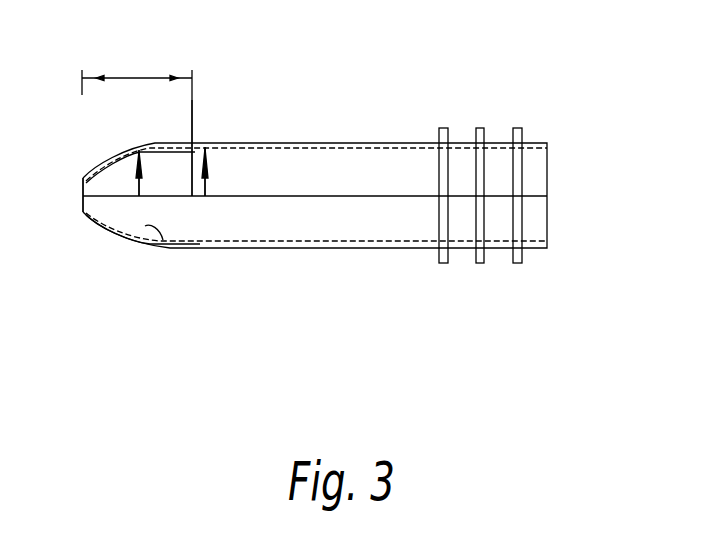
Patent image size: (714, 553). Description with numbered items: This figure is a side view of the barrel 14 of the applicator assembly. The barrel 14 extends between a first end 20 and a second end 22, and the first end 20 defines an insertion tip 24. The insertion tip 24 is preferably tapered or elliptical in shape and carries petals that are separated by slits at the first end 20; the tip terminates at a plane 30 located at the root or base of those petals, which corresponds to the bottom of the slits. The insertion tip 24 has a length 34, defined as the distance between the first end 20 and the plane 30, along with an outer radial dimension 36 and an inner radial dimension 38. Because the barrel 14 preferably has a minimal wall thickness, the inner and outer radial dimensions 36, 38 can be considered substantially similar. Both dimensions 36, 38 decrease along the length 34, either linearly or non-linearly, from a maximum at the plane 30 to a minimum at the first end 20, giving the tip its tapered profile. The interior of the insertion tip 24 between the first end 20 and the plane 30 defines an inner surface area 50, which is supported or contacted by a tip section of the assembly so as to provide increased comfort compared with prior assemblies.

The barrel 14 is at (239, 248).
The first end 20 is at (82, 190).
The second end 22 is at (548, 142).
The insertion tip 24 is at (125, 268).
The plane 30 is at (193, 112).
The length 34 is at (130, 78).
The outer radial dimension 36 is at (207, 172).
The inner radial dimension 38 is at (130, 173).
The inner surface area 50 is at (162, 242).